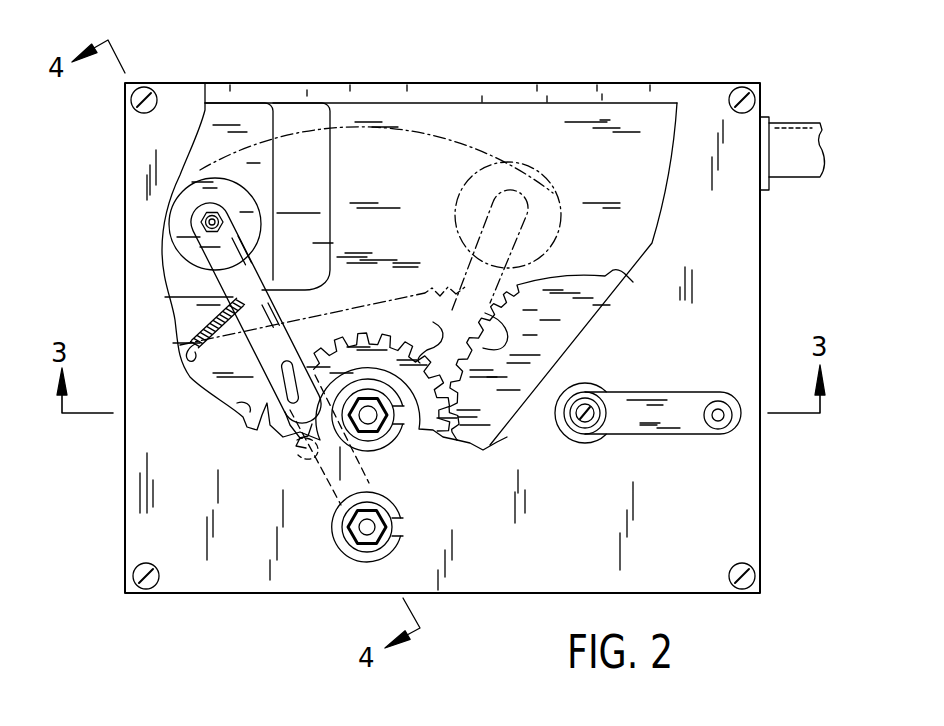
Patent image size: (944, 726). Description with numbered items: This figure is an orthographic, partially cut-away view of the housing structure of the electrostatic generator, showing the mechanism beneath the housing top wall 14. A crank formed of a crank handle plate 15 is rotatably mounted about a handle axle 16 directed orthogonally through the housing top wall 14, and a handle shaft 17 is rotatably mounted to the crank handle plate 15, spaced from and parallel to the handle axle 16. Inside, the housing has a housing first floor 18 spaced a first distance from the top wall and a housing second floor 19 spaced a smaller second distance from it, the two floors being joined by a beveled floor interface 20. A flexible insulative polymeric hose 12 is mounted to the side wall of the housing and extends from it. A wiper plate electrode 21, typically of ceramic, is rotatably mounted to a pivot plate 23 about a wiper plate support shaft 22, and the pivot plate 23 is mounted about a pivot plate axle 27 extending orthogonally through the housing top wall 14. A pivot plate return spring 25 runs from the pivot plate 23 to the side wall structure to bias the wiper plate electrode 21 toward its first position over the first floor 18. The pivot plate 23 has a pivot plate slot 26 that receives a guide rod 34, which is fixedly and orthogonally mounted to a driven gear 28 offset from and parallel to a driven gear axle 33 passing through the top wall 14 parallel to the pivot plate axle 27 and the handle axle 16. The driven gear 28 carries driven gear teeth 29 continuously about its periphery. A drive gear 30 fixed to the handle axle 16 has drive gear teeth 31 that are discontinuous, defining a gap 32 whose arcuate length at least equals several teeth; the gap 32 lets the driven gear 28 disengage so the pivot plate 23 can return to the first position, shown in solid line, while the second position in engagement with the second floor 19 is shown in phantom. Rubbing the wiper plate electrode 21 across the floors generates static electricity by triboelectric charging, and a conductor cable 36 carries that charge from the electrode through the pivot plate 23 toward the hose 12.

The flexible insulative polymeric hose 12 is at (790, 124).
The housing top wall 14 is at (730, 290).
The crank handle plate 15 is at (647, 400).
The handle axle 16 is at (589, 417).
The handle shaft 17 is at (718, 429).
The housing first floor 18 is at (230, 117).
The housing second floor 19 is at (430, 118).
The beveled floor interface 20 is at (333, 177).
The wiper plate electrode 21 is at (252, 222).
The wiper plate support shaft 22 is at (197, 228).
The pivot plate 23 is at (315, 287).
The pivot plate return spring 25 is at (192, 340).
The pivot plate slot 26 is at (290, 437).
The pivot plate axle 27 is at (372, 528).
The driven gear 28 is at (463, 437).
The driven gear teeth 29 is at (444, 332).
The drive gear 30 is at (577, 292).
The drive gear teeth 31 is at (488, 322).
The gap 32 is at (560, 278).
The driven gear axle 33 is at (375, 422).
The guide rod 34 is at (300, 450).
The conductor cable 36 is at (247, 422).